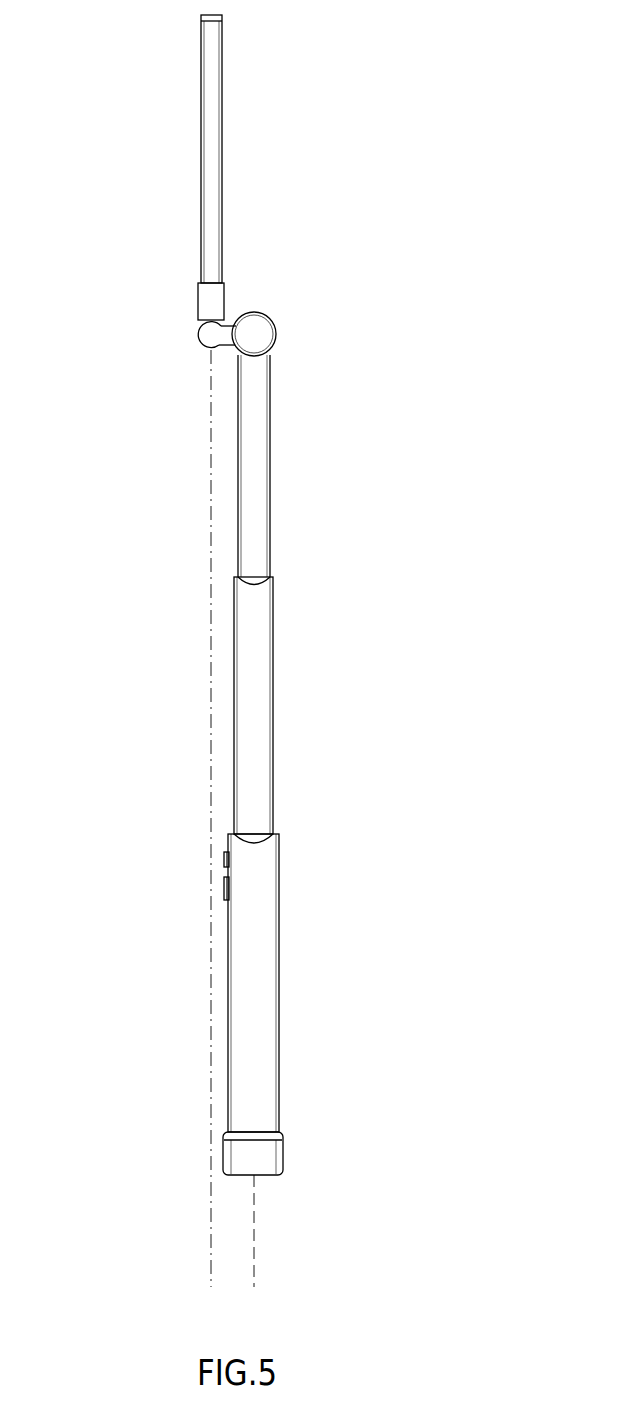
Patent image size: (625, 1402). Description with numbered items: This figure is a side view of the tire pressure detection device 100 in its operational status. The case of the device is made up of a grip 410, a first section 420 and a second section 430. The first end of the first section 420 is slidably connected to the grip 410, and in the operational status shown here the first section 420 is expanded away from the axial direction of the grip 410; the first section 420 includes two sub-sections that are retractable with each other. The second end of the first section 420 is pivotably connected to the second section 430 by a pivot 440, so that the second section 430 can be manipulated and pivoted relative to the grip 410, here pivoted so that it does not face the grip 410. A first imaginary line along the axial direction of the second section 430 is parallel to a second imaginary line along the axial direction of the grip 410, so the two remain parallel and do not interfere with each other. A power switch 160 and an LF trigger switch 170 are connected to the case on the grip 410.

The tire pressure detection device 100 is at (182, 1068).
The power switch 160 is at (224, 862).
The LF trigger switch 170 is at (224, 890).
The grip 410 is at (263, 990).
The first section 420 is at (263, 672).
The second section 430 is at (210, 118).
The pivot 440 is at (178, 352).